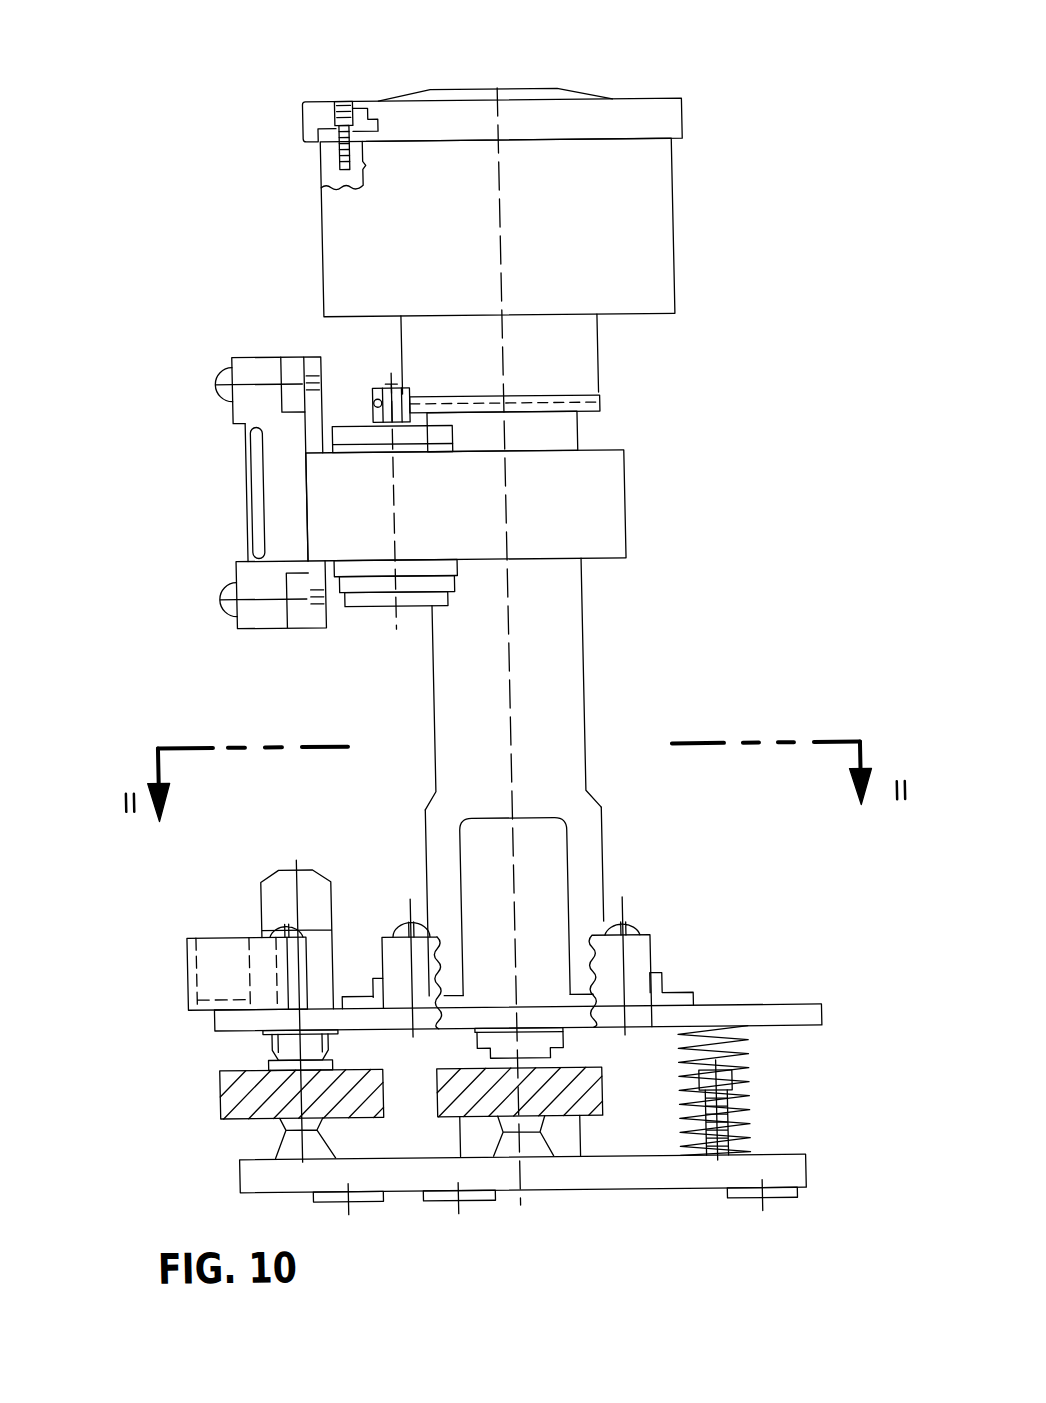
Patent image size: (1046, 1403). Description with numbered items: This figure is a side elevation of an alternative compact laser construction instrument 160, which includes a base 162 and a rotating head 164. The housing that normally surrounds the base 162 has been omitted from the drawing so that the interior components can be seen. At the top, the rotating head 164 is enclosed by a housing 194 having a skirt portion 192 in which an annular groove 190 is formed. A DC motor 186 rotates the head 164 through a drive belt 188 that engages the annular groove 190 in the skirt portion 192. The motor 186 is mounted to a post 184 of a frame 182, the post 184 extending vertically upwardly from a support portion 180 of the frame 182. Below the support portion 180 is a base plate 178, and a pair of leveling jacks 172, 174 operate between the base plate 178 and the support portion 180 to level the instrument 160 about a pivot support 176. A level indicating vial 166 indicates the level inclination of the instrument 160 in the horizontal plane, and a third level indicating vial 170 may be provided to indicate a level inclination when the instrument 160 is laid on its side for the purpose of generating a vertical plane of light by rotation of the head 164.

The compact laser construction instrument 160 is at (572, 74).
The rotating head 164 is at (568, 227).
The housing 194 is at (280, 189).
The drive belt 188 is at (291, 356).
The skirt portion 192 is at (569, 353).
The annular groove 190 is at (573, 415).
The third level indicating vial 170 is at (374, 492).
The DC motor 186 is at (372, 521).
The post 184 is at (574, 610).
The frame 182 is at (595, 900).
The level indicating vial 166 is at (194, 1012).
The base 162 is at (466, 1095).
The support portion 180 is at (534, 989).
The leveling jack 172 is at (351, 1159).
The pivot support 176 is at (491, 1140).
The leveling jack 174 is at (583, 1178).
The base plate 178 is at (524, 1202).